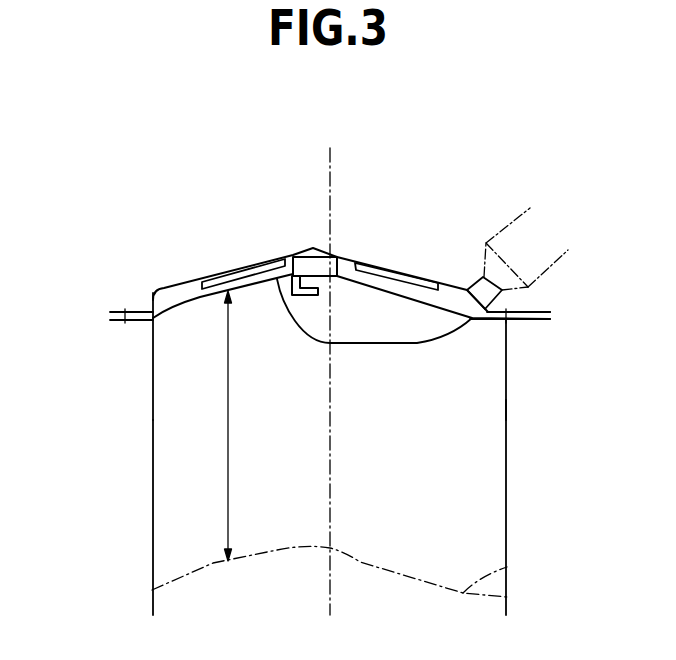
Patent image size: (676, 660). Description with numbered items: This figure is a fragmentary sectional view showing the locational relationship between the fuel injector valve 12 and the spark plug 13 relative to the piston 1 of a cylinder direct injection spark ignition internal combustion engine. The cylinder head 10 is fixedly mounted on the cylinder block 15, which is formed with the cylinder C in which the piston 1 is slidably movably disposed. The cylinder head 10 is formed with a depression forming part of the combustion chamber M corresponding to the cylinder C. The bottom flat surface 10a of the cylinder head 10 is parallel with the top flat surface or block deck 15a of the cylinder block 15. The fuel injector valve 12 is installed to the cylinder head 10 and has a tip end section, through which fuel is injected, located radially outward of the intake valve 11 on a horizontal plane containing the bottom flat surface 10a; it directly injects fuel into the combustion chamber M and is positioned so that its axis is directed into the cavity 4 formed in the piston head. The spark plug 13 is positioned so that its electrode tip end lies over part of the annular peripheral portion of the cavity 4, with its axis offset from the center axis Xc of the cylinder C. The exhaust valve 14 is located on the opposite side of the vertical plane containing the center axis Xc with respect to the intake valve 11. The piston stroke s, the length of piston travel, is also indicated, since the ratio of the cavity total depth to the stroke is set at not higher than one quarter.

The piston 1 is at (165, 420).
The cavity 4 is at (370, 344).
The cylinder head 10 is at (133, 300).
The bottom flat surface 10a is at (124, 320).
The intake valve 11 is at (404, 272).
The fuel injector valve 12 is at (558, 261).
The spark plug 13 is at (307, 270).
The exhaust valve 14 is at (243, 268).
The cylinder block 15 is at (142, 350).
The block deck 15a is at (518, 320).
The combustion chamber M is at (304, 279).
The cylinder C is at (501, 402).
The center axis of the cylinder Xc is at (330, 462).
The piston stroke s is at (237, 426).